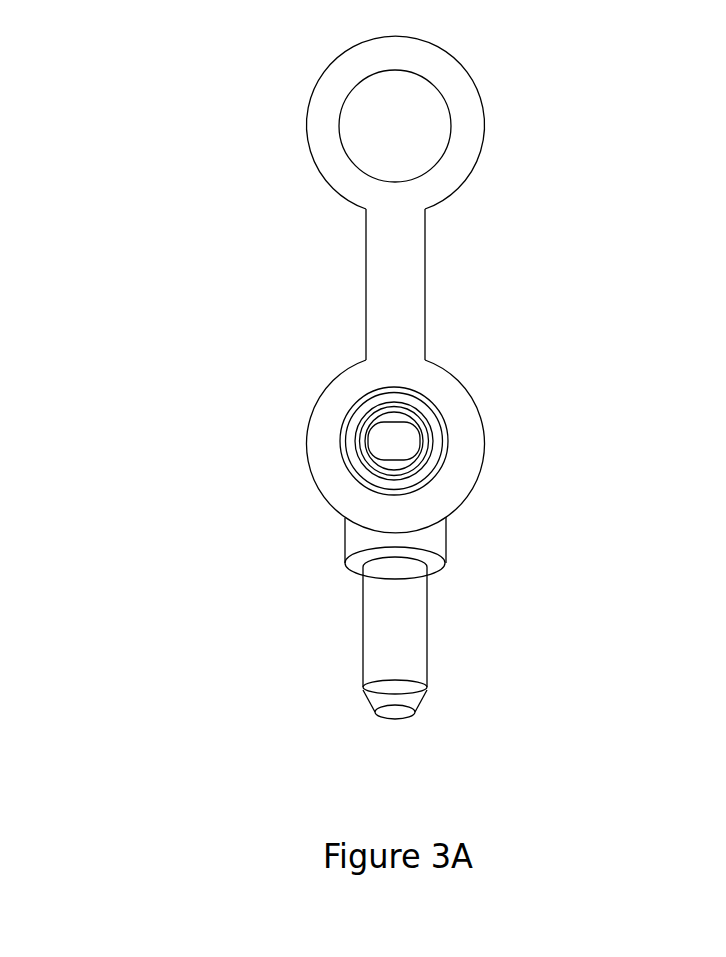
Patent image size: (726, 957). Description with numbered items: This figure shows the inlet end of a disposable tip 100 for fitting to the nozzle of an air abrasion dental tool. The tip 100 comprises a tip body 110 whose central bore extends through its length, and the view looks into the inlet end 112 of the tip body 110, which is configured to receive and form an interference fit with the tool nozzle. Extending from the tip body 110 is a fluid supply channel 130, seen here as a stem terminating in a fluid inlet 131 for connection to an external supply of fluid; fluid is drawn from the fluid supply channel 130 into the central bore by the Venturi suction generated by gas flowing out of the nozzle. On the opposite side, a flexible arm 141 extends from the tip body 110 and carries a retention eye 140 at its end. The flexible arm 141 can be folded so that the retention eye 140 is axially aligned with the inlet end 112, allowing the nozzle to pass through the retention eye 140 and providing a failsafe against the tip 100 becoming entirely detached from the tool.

The disposable tip/cap 100 is at (286, 310).
The tip body 110 is at (467, 389).
The inlet end 112 is at (393, 442).
The fluid supply channel 130 is at (406, 637).
The fluid inlet 131 is at (397, 713).
The retention eye 140 is at (462, 123).
The flexible arm 141 is at (407, 274).